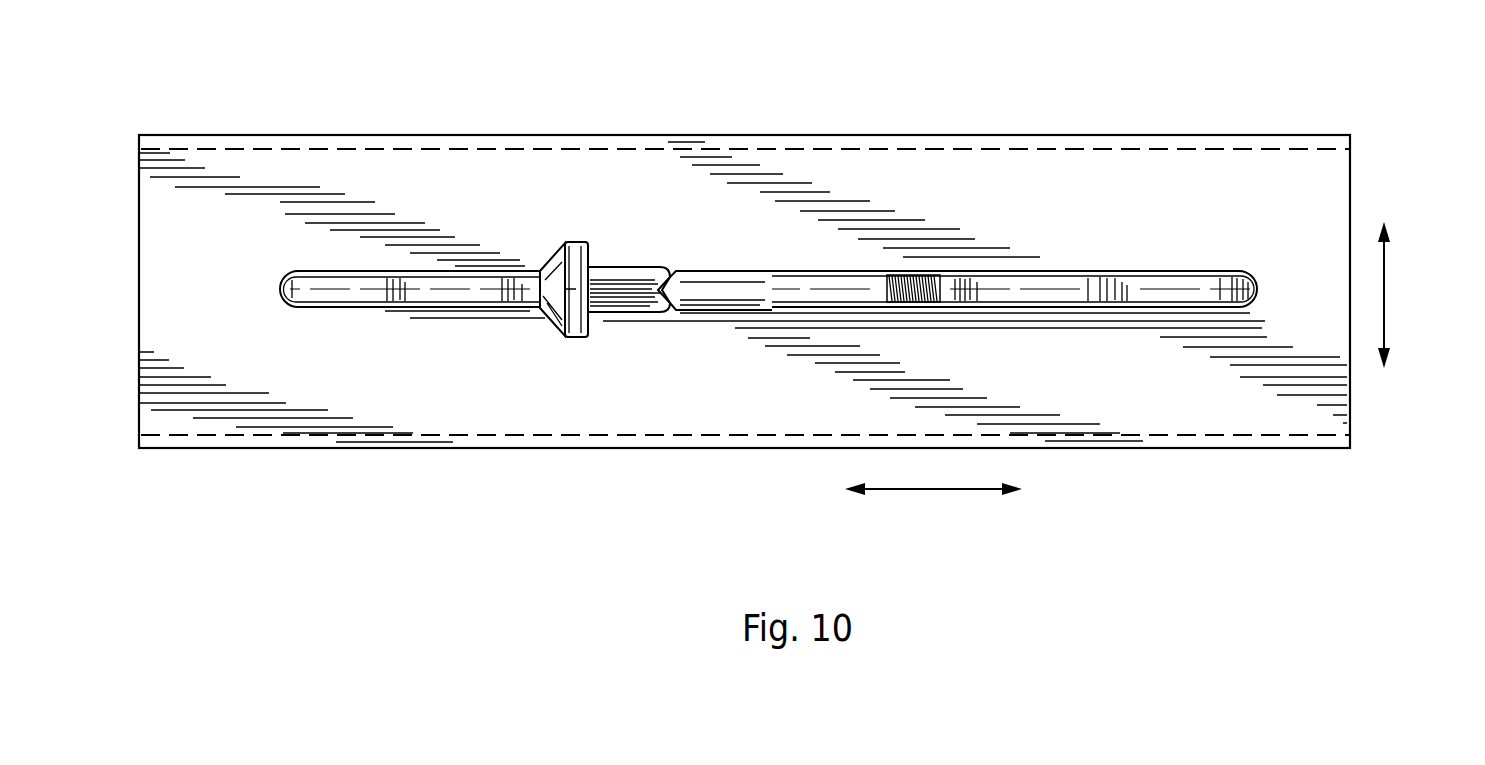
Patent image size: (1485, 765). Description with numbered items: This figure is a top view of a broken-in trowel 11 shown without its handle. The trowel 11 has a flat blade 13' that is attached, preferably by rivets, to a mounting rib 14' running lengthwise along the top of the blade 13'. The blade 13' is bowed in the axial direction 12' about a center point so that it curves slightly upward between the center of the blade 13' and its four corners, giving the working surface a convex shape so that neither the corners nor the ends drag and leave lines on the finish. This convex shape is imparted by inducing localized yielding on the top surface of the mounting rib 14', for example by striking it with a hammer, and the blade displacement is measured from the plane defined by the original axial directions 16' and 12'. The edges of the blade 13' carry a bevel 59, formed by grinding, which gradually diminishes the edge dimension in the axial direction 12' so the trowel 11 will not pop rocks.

The trowel 11 is at (768, 93).
The blade 13' is at (743, 246).
The bevel 59 is at (1033, 134).
The mounting rib 14' is at (768, 375).
The axial direction 16' is at (1420, 295).
The axial direction 12' is at (933, 532).